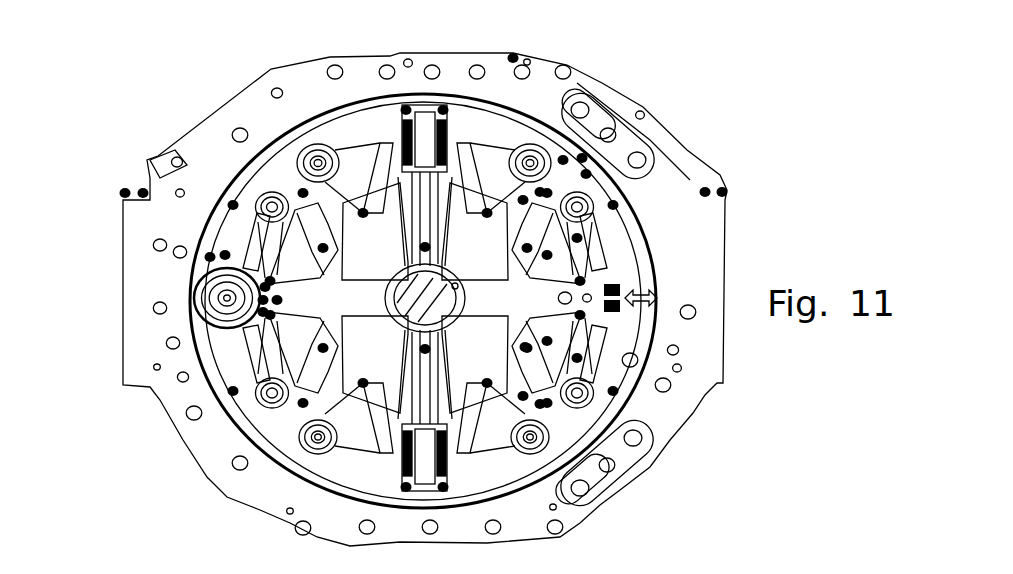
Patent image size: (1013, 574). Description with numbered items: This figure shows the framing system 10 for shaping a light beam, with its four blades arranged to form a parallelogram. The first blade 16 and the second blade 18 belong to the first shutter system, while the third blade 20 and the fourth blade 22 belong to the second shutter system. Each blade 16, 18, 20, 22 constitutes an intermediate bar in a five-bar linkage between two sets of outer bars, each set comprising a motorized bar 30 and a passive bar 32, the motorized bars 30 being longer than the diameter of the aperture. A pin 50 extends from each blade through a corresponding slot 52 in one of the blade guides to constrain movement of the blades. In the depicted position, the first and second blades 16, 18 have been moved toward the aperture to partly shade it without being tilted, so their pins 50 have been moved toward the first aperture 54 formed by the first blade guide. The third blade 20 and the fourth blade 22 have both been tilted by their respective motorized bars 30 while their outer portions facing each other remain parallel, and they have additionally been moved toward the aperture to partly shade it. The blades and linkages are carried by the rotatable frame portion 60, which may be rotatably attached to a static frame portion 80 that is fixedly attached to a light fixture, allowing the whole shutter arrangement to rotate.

The framing system 10 is at (163, 70).
The first blade 16 is at (470, 257).
The second blade 18 is at (480, 347).
The third blade 20 is at (447, 297).
The fourth blade 22 is at (407, 292).
The motorized bar 30 is at (345, 160).
The passive bar 32 is at (385, 162).
The pin 50 is at (422, 187).
The slot 52 is at (420, 247).
The first aperture 54 is at (455, 286).
The rotatable frame portion 60 is at (585, 173).
The static frame portion 80 is at (700, 305).